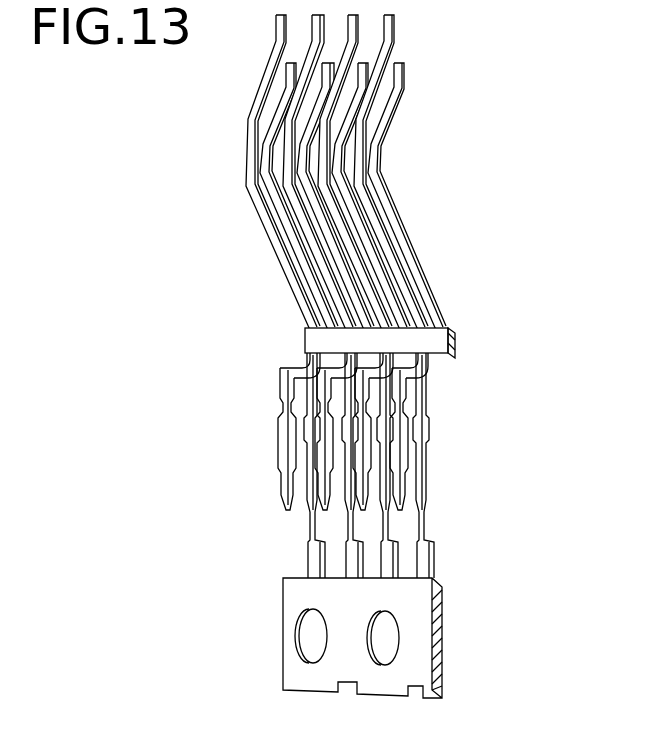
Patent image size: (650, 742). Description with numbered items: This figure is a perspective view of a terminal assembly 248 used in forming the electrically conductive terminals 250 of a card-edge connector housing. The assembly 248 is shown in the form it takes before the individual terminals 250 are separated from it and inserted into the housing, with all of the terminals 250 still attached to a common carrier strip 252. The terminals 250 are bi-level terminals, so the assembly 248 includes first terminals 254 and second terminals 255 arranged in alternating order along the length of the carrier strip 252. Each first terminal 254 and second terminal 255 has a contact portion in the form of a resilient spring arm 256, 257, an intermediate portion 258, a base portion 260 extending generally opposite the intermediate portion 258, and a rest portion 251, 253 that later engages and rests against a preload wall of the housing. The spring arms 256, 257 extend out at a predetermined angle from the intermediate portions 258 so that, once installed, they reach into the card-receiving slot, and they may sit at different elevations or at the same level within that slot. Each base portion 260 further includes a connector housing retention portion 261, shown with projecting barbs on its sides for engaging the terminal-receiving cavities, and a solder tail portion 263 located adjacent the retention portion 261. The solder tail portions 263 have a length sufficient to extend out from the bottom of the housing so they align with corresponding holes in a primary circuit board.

The terminal assembly 248 is at (475, 327).
The electrically conductive terminals 250 is at (327, 171).
The rest portion 251 is at (400, 36).
The carrier strip 252 is at (303, 590).
The rest portion 253 is at (406, 78).
The first terminal 254 is at (245, 190).
The second terminal 255 is at (410, 200).
The resilient spring arm 256 is at (330, 240).
The resilient spring arm 257 is at (365, 195).
The intermediate portion 258 is at (452, 347).
The base portion 260 is at (305, 362).
The connector housing retention portion 261 is at (290, 387).
The solder tail portion 263 is at (323, 487).